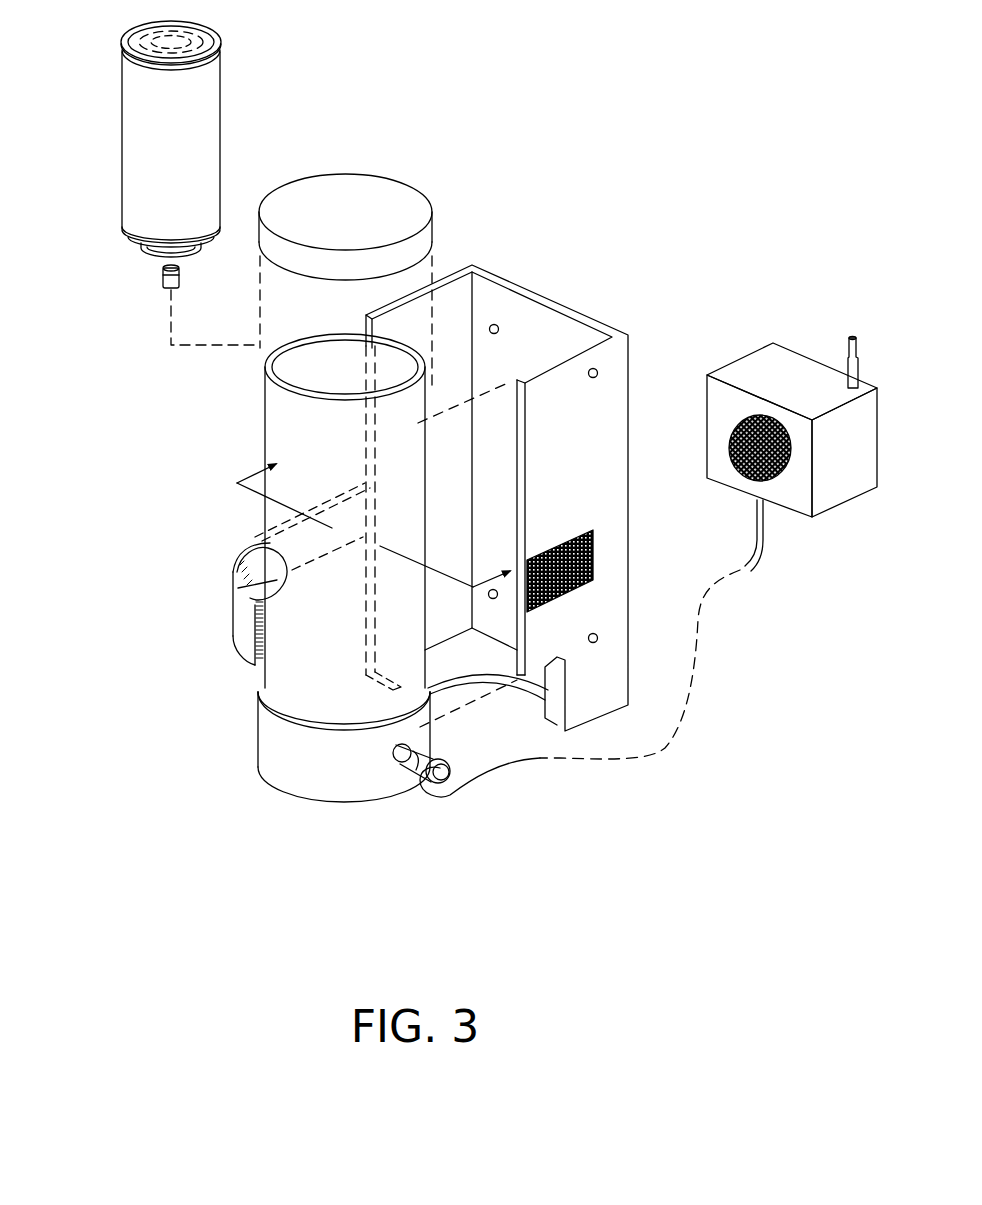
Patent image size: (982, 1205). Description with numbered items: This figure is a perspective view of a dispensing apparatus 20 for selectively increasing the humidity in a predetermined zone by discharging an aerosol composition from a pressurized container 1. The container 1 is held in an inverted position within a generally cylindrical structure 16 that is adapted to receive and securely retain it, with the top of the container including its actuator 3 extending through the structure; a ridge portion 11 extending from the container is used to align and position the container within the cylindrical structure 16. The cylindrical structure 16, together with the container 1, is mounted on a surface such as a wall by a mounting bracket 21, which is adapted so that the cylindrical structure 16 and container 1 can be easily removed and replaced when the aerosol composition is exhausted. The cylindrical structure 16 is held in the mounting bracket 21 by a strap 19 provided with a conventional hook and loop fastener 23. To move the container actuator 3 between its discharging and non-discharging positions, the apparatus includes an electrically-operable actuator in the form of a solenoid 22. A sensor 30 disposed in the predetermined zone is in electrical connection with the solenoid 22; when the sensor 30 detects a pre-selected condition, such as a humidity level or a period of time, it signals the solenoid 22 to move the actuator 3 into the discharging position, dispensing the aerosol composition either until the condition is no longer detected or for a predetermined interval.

The container 1 is at (220, 117).
The ridge portion 11 is at (147, 262).
The actuator 3 is at (165, 284).
The dispensing apparatus 20 is at (435, 148).
The mounting bracket 21 is at (553, 302).
The cylindrical structure 16 is at (280, 740).
The strap 19 is at (250, 545).
The hook and loop fastener 23 is at (250, 553).
The solenoid 22 is at (437, 767).
The sensor 30 is at (755, 363).